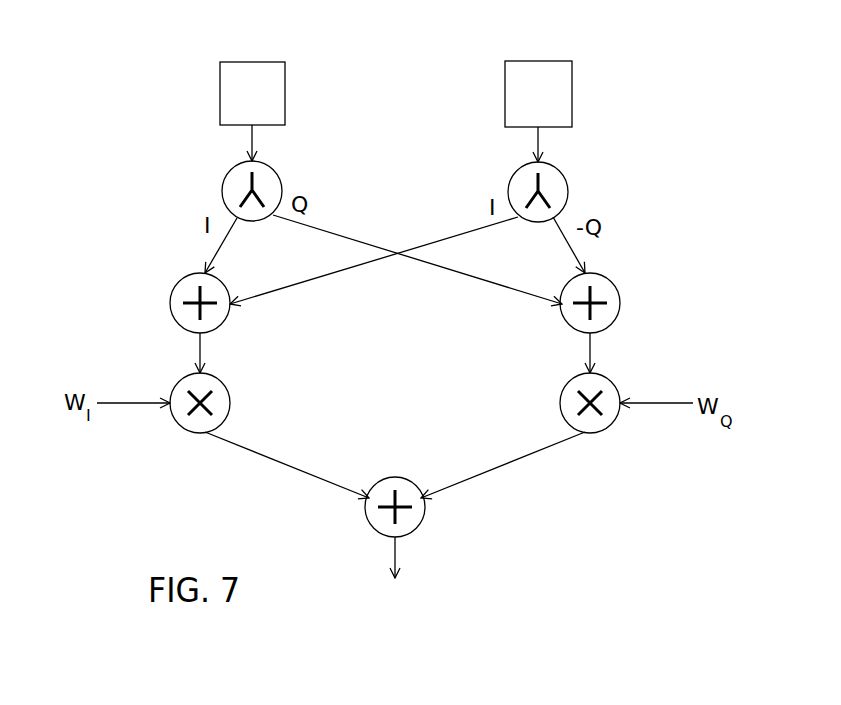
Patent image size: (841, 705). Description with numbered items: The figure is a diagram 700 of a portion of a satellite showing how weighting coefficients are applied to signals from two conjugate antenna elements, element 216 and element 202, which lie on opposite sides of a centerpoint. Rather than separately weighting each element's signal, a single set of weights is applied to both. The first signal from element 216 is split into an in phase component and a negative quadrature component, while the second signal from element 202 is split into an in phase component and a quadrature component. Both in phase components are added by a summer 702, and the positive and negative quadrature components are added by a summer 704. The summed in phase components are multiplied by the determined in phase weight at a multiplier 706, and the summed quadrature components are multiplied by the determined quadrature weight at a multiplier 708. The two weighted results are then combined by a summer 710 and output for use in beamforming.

The diagram 700 is at (145, 55).
The element 202 is at (271, 105).
The element 216 is at (557, 105).
The summer 702 is at (176, 282).
The summer 704 is at (614, 282).
The multiplier 706 is at (176, 382).
The multiplier 708 is at (614, 382).
The summer 710 is at (422, 523).